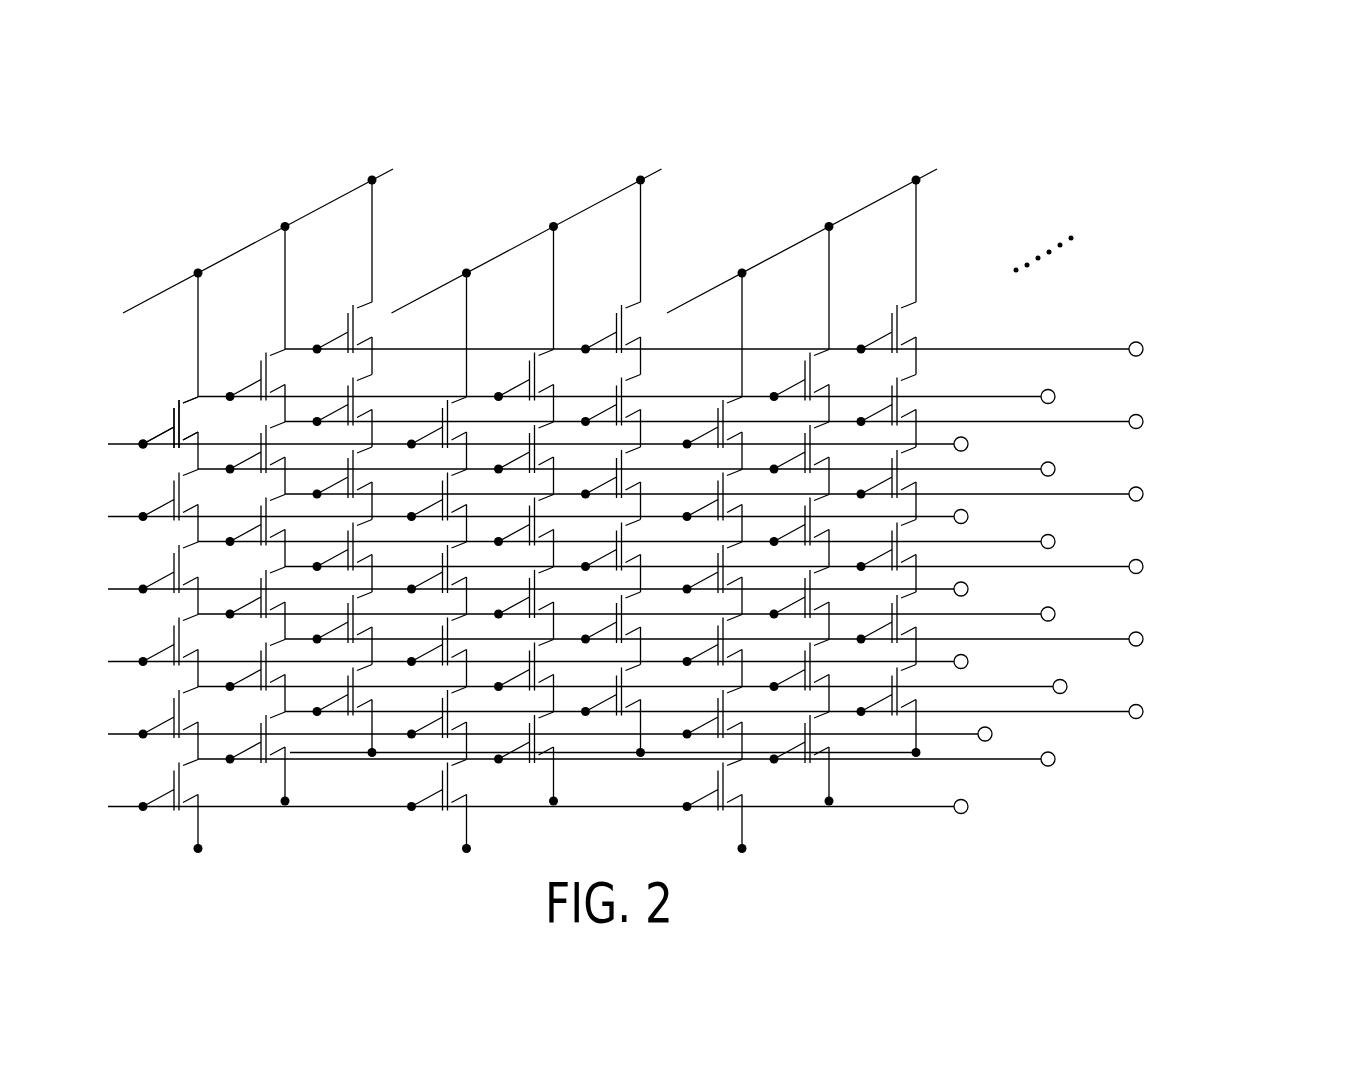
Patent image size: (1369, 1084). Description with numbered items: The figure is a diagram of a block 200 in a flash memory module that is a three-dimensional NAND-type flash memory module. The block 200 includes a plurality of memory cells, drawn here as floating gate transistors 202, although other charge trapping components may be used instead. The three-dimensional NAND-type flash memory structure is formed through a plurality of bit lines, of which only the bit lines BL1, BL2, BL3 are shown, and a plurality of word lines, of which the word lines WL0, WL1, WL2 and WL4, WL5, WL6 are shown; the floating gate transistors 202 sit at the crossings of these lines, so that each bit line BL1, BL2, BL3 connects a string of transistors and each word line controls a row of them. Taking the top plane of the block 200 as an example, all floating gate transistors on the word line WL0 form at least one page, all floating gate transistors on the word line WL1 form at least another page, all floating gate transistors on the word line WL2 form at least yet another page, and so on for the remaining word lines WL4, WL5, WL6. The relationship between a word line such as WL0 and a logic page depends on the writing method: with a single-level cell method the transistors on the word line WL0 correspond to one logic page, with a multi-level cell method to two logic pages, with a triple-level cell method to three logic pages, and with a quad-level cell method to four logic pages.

The block 200 is at (701, 463).
The floating gate transistor 202 is at (172, 418).
The bit line BL1 is at (268, 463).
The bit line BL2 is at (537, 463).
The bit line BL3 is at (811, 463).
The word line WL0 is at (968, 444).
The word line WL1 is at (1055, 397).
The word line WL2 is at (1143, 349).
The word line WL4 is at (968, 516).
The word line WL5 is at (1055, 469).
The word line WL6 is at (1143, 421).